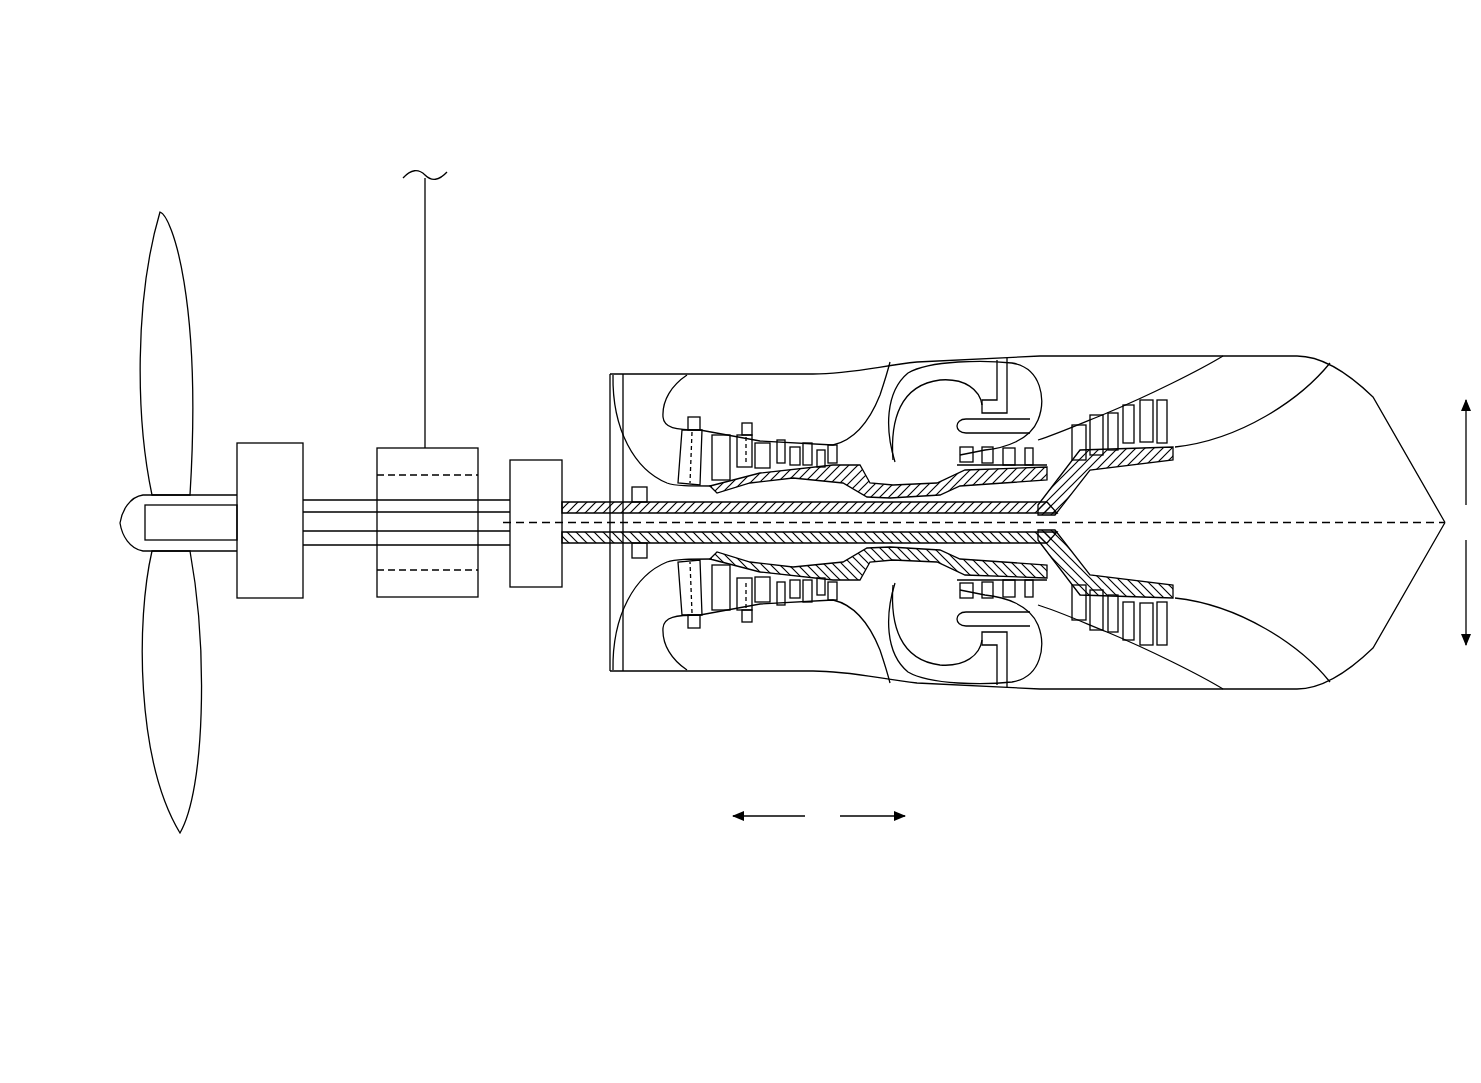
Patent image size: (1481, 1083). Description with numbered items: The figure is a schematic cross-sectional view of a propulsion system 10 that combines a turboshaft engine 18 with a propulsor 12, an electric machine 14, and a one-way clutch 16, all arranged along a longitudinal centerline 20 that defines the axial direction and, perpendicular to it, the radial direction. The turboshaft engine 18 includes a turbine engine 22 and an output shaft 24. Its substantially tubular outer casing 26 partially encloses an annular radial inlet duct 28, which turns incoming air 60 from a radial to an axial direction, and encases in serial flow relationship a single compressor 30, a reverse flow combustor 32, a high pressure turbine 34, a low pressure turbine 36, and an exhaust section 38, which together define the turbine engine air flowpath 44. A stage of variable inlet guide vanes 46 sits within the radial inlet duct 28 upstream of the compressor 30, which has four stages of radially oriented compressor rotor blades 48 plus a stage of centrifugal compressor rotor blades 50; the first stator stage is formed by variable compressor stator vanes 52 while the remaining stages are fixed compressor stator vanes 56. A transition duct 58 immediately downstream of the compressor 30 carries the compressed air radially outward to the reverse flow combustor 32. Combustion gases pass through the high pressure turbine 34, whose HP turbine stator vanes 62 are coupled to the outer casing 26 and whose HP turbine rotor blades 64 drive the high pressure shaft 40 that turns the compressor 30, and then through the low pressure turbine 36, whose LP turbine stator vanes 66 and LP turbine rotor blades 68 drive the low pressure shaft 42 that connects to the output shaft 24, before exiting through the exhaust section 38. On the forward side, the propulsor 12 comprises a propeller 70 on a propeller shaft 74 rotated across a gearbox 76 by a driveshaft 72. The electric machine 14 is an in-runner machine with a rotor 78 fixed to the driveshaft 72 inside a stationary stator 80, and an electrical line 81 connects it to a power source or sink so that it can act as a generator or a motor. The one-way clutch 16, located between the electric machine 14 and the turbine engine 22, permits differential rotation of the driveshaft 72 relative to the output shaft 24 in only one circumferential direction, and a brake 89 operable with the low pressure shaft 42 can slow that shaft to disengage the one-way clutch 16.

The propulsion system 10 is at (988, 120).
The propulsor 12 is at (290, 259).
The electric machine 14 is at (428, 621).
The one-way clutch 16 is at (537, 460).
The turboshaft engine 18 is at (1103, 276).
The longitudinal centerline 20 is at (1318, 523).
The turbine engine 22 is at (1088, 350).
The output shaft 24 is at (586, 433).
The outer casing 26 is at (1045, 354).
The radial inlet duct 28 is at (636, 645).
The compressor 30 is at (787, 628).
The reverse flow combustor 32 is at (953, 645).
The high pressure turbine 34 is at (1012, 557).
The low pressure turbine 36 is at (1094, 638).
The exhaust section 38 is at (1292, 678).
The high pressure shaft 40 is at (903, 478).
The low pressure shaft 42 is at (1125, 471).
The turbine engine air flowpath 44 is at (1064, 426).
The inlet guide vanes 46 is at (690, 630).
The compressor rotor blades 48 is at (725, 600).
The centrifugal compressor rotor blades 50 is at (872, 437).
The variable compressor stator vanes 52 is at (730, 432).
The fixed compressor stator vanes 56 is at (778, 432).
The transition duct 58 is at (887, 650).
The air 60 is at (662, 449).
The HP turbine stator vanes 62 is at (1010, 597).
The HP turbine rotor blades 64 is at (986, 598).
The LP turbine stator vanes 66 is at (1142, 637).
The LP turbine rotor blades 68 is at (1125, 627).
The propeller 70 is at (163, 288).
The driveshaft 72 is at (332, 500).
The propeller shaft 74 is at (195, 494).
The gearbox 76 is at (268, 598).
The rotor 78 is at (376, 556).
The stator 80 is at (400, 597).
The electrical line 81 is at (426, 312).
The brake 89 is at (632, 556).